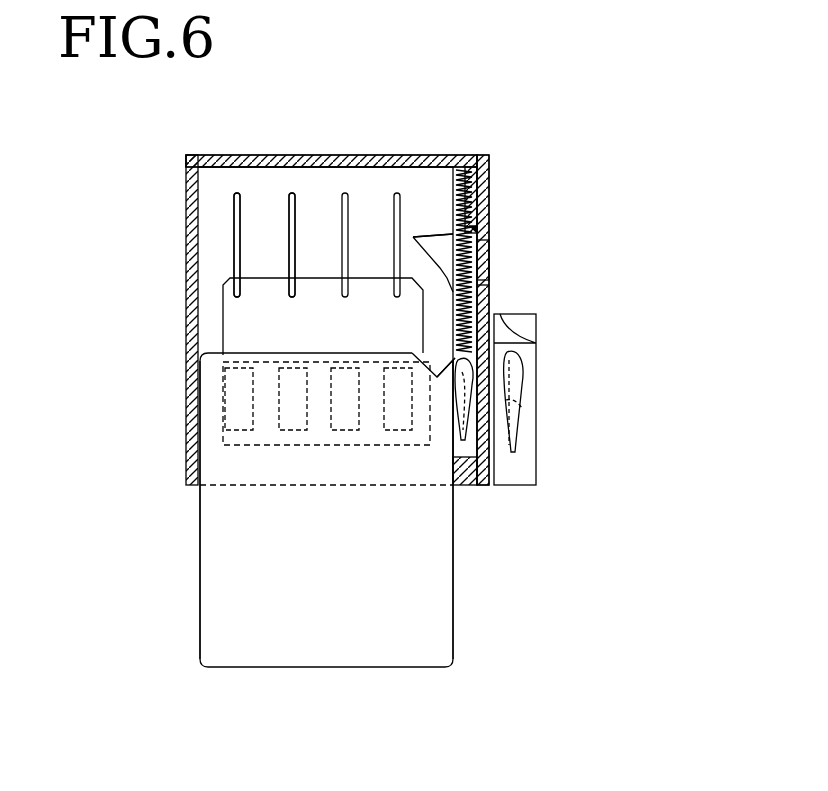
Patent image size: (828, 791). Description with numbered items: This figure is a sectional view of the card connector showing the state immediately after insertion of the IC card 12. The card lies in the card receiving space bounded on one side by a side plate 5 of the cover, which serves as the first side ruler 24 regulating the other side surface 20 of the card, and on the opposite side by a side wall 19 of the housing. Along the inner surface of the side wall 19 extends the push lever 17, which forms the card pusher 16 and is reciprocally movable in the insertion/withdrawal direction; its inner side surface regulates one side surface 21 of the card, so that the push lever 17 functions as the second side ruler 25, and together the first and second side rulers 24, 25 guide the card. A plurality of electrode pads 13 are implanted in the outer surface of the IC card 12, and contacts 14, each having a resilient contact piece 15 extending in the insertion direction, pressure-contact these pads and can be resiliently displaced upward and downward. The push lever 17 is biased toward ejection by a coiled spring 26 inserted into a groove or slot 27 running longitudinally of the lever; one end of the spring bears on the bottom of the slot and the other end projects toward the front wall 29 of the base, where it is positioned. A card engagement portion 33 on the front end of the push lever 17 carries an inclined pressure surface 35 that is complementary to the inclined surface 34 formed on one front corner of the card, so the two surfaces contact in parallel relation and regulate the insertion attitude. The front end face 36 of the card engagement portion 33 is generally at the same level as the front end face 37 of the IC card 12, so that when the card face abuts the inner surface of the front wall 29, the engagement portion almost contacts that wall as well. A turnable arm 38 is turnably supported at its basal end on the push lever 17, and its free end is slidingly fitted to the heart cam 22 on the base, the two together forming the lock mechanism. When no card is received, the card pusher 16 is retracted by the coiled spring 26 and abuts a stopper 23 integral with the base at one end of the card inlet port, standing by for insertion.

The side plate 5 is at (190, 300).
The IC card 12 is at (222, 615).
The electrode pads 13 is at (238, 390).
The contact 14 is at (289, 255).
The resilient contact piece 15 is at (234, 200).
The card pusher 16 is at (488, 232).
The push lever 17 is at (584, 409).
The side wall 19 is at (490, 270).
The other side surface 20 is at (200, 560).
The one side surface 21 is at (453, 572).
The heart cam 22 is at (537, 375).
The stopper 23 is at (478, 484).
The first side ruler 24 is at (277, 320).
The second side ruler 25 is at (524, 468).
The coiled spring 26 is at (490, 170).
The groove or slot 27 is at (472, 240).
The front wall 29 is at (283, 157).
The card engagement portion 33 is at (427, 237).
The inclined surface 34 is at (536, 344).
The inclined pressure surface 35 is at (492, 290).
The front end face of card engagement portion 36 is at (440, 235).
The front end face of IC card 37 is at (262, 353).
The turnable arm 38 is at (537, 410).